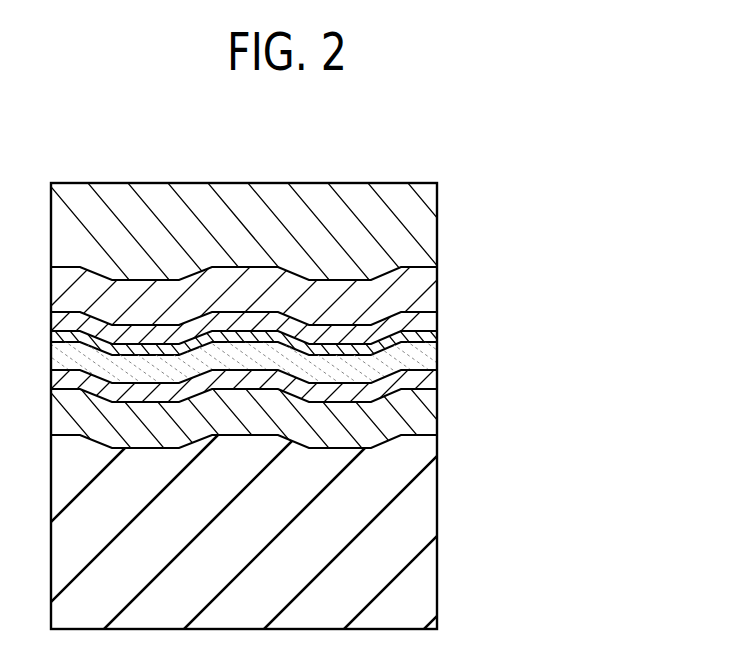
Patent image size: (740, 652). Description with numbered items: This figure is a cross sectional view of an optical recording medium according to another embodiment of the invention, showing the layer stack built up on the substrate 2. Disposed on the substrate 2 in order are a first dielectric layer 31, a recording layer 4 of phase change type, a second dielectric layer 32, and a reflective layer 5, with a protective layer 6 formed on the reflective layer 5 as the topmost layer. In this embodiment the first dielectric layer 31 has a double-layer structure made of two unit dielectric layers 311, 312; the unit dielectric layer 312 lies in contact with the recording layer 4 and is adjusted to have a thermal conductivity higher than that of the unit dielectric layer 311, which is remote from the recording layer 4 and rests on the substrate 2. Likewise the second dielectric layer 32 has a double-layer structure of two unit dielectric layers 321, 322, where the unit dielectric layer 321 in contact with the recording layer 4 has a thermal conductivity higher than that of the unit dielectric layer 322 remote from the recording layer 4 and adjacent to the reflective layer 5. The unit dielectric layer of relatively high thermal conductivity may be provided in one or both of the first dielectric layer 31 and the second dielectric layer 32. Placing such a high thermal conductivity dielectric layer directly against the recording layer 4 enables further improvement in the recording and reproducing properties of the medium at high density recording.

The protective layer 6 is at (437, 232).
The reflective layer 5 is at (437, 288).
The second dielectric layer 32 is at (345, 312).
The unit dielectric layer 322 is at (437, 315).
The unit dielectric layer 321 is at (437, 333).
The recording layer 4 is at (437, 352).
The first dielectric layer 31 is at (344, 432).
The unit dielectric layer 312 is at (437, 377).
The unit dielectric layer 311 is at (437, 408).
The substrate 2 is at (437, 523).